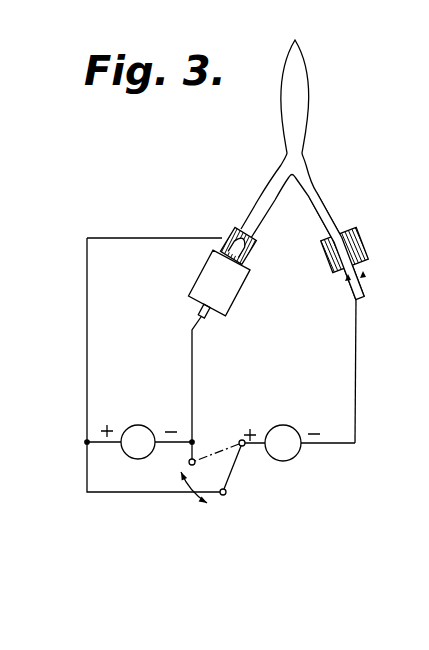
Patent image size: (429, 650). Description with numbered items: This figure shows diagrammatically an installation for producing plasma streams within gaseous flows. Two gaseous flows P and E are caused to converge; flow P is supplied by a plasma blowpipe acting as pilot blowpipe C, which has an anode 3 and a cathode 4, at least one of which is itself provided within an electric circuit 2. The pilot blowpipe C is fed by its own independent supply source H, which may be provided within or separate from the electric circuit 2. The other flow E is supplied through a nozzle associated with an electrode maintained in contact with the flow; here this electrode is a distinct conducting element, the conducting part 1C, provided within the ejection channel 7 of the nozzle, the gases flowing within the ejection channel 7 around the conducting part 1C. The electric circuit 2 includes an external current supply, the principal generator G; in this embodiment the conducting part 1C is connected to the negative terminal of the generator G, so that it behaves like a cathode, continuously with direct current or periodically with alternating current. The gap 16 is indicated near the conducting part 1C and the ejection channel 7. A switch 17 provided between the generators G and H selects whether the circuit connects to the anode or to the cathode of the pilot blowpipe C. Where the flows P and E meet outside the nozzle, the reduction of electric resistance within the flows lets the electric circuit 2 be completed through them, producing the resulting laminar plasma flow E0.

The laminar plasma flow E0 is at (297, 70).
The gaseous flow P is at (267, 185).
The gaseous flow E is at (314, 189).
The anode 3 is at (229, 234).
The cathode 4 is at (244, 252).
The pilot blowpipe C is at (220, 295).
The ejection channel 7 is at (346, 234).
The conducting part 1C is at (358, 243).
The gap 16 is at (370, 297).
The electric circuit 2 is at (355, 362).
The independent supply source H is at (139, 442).
The principal generator G is at (299, 443).
The switch 17 is at (230, 475).